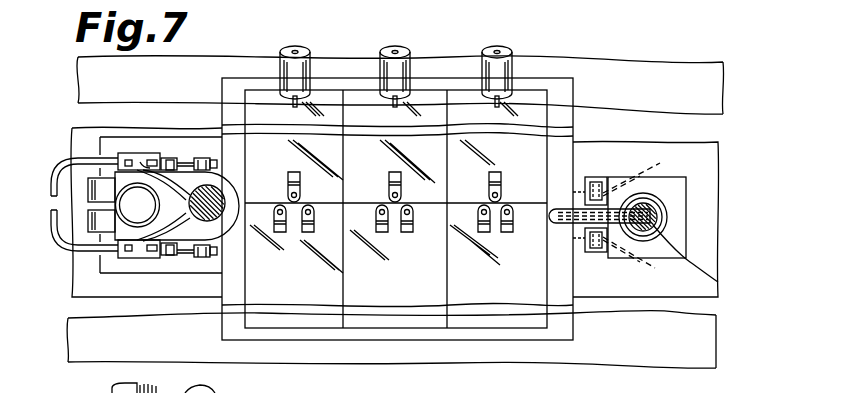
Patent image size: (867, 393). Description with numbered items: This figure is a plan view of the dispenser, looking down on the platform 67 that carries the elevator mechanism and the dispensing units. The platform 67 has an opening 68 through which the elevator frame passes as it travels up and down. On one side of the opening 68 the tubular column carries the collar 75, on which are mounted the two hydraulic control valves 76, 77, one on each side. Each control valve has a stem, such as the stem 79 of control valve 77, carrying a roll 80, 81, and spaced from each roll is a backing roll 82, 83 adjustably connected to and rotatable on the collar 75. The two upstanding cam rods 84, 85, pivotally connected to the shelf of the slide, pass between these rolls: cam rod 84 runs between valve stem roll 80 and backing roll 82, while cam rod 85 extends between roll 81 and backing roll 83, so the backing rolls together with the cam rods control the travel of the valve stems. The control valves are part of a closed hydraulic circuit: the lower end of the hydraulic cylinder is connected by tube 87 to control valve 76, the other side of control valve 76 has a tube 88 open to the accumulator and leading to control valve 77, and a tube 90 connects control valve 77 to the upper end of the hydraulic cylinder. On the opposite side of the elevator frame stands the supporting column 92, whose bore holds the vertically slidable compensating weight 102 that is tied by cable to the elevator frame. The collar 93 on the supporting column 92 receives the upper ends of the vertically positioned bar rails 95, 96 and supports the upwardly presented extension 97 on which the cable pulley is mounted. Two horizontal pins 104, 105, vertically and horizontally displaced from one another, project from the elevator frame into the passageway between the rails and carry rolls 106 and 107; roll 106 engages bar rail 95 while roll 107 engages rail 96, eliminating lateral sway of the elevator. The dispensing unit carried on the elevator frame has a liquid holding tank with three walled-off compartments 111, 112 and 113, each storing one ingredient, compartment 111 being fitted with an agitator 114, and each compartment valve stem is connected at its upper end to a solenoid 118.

The platform 67 is at (708, 256).
The opening 68 is at (560, 342).
The collar 75 is at (103, 211).
The hydraulic control valve 76 is at (143, 257).
The hydraulic control valve 77 is at (148, 152).
The stem 79 is at (163, 157).
The roll 80 is at (173, 255).
The roll 81 is at (173, 158).
The backing roll 82 is at (217, 250).
The backing roll 83 is at (217, 164).
The cam rod 84 is at (190, 257).
The cam rod 85 is at (192, 158).
The tube 87 is at (143, 250).
The tube 88 is at (60, 259).
The tube 90 is at (143, 160).
The supporting column 92 is at (663, 205).
The collar 93 is at (680, 220).
The bar rail 95 is at (600, 252).
The bar rail 96 is at (620, 178).
The extension 97 is at (580, 224).
The compensating weight 102 is at (718, 282).
The pin 104 is at (578, 248).
The pin 105 is at (587, 187).
The roll 106 is at (643, 267).
The roll 107 is at (650, 175).
The compartment 111 is at (503, 174).
The compartment 112 is at (473, 242).
The compartment 113 is at (519, 242).
The agitator 114 is at (512, 64).
The solenoid 118 is at (407, 226).